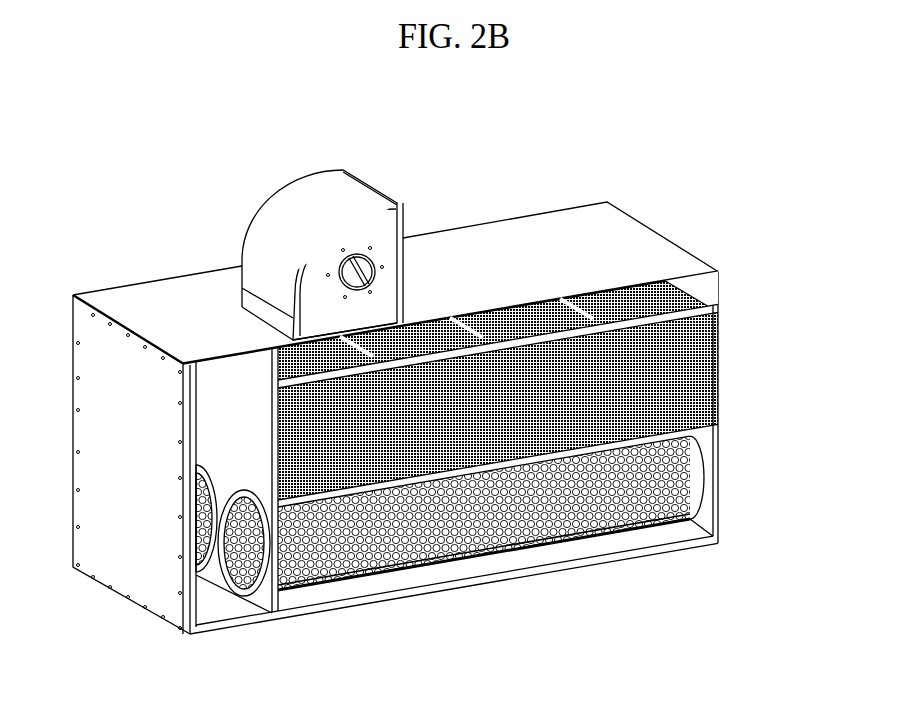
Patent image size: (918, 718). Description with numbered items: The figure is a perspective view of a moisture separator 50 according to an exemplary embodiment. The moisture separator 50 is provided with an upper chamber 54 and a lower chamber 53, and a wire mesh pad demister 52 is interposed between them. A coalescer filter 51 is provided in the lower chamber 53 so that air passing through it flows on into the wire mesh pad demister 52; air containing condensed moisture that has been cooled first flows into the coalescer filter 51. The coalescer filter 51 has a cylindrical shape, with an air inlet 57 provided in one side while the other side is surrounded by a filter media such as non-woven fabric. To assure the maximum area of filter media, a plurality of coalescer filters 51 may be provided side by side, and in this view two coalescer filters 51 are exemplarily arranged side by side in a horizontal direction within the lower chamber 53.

The moisture separator 50 is at (452, 168).
The coalescer filter 51 is at (573, 540).
The wire mesh pad demister 52 is at (721, 345).
The lower chamber 53 is at (665, 535).
The upper chamber 54 is at (700, 288).
The air inlet 57 is at (240, 592).